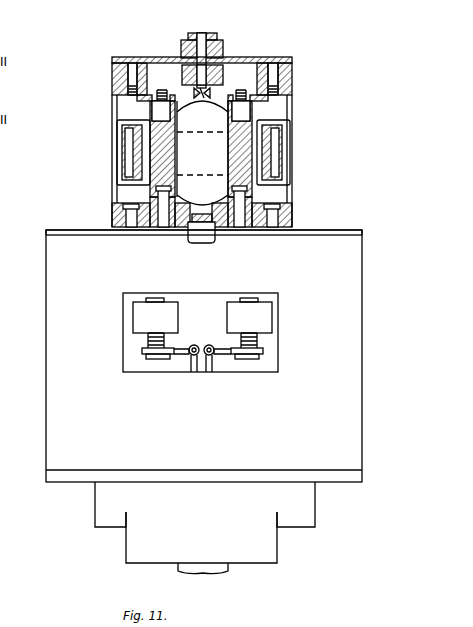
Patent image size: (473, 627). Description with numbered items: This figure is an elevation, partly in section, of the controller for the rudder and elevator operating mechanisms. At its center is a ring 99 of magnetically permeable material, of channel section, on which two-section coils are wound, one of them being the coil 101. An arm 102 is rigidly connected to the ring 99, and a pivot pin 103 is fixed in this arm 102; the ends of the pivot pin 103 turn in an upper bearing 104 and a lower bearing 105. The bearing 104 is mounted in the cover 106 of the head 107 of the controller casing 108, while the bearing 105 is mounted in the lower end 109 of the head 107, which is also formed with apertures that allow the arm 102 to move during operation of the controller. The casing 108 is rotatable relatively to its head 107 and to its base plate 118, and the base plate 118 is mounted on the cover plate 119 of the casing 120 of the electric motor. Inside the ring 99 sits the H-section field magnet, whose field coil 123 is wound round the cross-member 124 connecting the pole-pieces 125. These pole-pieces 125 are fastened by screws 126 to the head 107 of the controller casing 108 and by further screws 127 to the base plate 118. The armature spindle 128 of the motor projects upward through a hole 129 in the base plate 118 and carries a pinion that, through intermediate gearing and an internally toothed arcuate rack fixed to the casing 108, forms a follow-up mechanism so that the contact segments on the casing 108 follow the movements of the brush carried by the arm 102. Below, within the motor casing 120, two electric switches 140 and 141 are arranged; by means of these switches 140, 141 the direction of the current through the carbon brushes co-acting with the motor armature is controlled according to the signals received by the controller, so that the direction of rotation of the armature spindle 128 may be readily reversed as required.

The ring 99 is at (130, 153).
The two-section coil 101 is at (282, 176).
The arm 102 is at (223, 78).
The pivot pin 103 is at (201, 35).
The bearing 104 is at (210, 38).
The bearing 105 is at (203, 98).
The cover 106 is at (152, 57).
The head 107 is at (292, 70).
The controller casing 108 is at (118, 92).
The lower end of the head 109 is at (200, 92).
The base plate 118 is at (112, 226).
The cover plate 119 is at (60, 229).
The motor casing 120 is at (46, 277).
The field coil 123 is at (202, 190).
The cross-member 124 is at (201, 156).
The pole-pieces 125 is at (228, 142).
The screws 126 is at (157, 111).
The screws 127 is at (162, 235).
The armature spindle 128 is at (198, 240).
The hole 129 is at (213, 235).
The electric switch 140 is at (161, 328).
The electric switch 141 is at (243, 328).